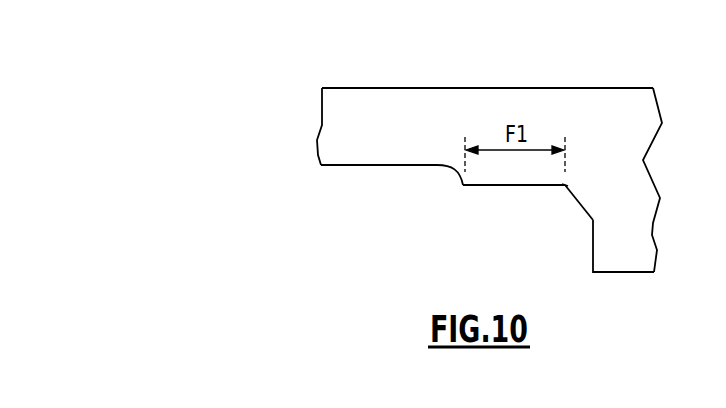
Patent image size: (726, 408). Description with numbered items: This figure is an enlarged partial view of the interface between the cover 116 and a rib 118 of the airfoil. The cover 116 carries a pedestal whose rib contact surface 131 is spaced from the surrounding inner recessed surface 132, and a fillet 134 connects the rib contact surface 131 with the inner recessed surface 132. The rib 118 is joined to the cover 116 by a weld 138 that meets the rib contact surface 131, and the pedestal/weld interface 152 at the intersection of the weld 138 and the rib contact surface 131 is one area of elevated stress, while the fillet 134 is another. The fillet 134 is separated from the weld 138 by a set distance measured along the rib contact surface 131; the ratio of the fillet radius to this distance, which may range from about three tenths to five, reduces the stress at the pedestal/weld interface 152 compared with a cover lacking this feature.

The cover 116 is at (377, 102).
The inner recessed surface 132 is at (358, 166).
The fillet 134 is at (457, 172).
The rib contact surface 131 is at (497, 186).
The weld 138 is at (582, 213).
The rib 118 is at (606, 262).
The pedestal/weld interface 152 is at (572, 180).